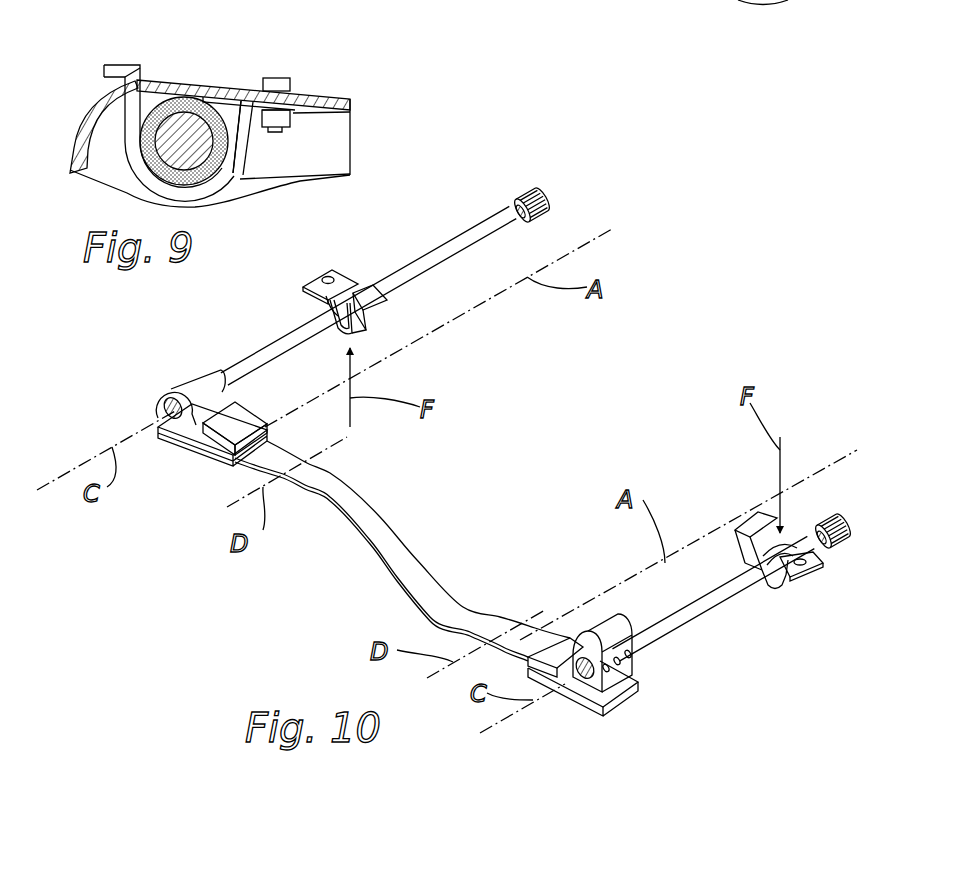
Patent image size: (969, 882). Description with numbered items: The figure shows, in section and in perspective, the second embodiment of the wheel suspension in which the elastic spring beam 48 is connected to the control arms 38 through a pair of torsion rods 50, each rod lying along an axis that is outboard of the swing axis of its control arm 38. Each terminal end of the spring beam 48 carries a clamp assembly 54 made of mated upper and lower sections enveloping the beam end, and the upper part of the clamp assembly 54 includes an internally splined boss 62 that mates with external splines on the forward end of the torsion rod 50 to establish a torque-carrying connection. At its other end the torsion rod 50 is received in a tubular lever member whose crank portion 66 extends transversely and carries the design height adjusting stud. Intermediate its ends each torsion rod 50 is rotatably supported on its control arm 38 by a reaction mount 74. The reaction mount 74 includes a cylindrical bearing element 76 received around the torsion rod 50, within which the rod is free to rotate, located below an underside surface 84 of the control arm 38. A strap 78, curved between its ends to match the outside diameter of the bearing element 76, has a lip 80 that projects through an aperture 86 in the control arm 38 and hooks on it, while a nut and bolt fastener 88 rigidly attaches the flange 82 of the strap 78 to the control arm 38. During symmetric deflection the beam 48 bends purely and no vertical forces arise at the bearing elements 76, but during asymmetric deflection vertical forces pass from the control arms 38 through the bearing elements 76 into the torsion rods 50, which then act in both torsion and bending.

In FIG. 9, the control arm 38 is at (327, 92).
In FIG. 10, the spring beam 48 is at (390, 557).
In FIG. 9, the torsion rod 50 is at (192, 127).
In FIG. 10, the torsion rod 50 is at (477, 236).
In FIG. 10, the clamp assembly 54 is at (163, 392).
In FIG. 10, the boss 62 is at (203, 382).
In FIG. 9, the crank portion 66 is at (337, 143).
In FIG. 9, the reaction mount 74 is at (232, 178).
In FIG. 10, the reaction mount 74 is at (392, 305).
In FIG. 9, the bearing element 76 is at (158, 138).
In FIG. 10, the bearing element 76 is at (323, 308).
In FIG. 9, the strap 78 is at (244, 122).
In FIG. 10, the strap 78 is at (365, 307).
In FIG. 9, the lip 80 is at (102, 70).
In FIG. 10, the lip 80 is at (388, 290).
In FIG. 9, the flange 82 is at (287, 110).
In FIG. 10, the flange 82 is at (343, 274).
In FIG. 9, the underside surface 84 is at (350, 113).
In FIG. 9, the aperture 86 is at (140, 74).
In FIG. 9, the nut and bolt fastener 88 is at (281, 78).